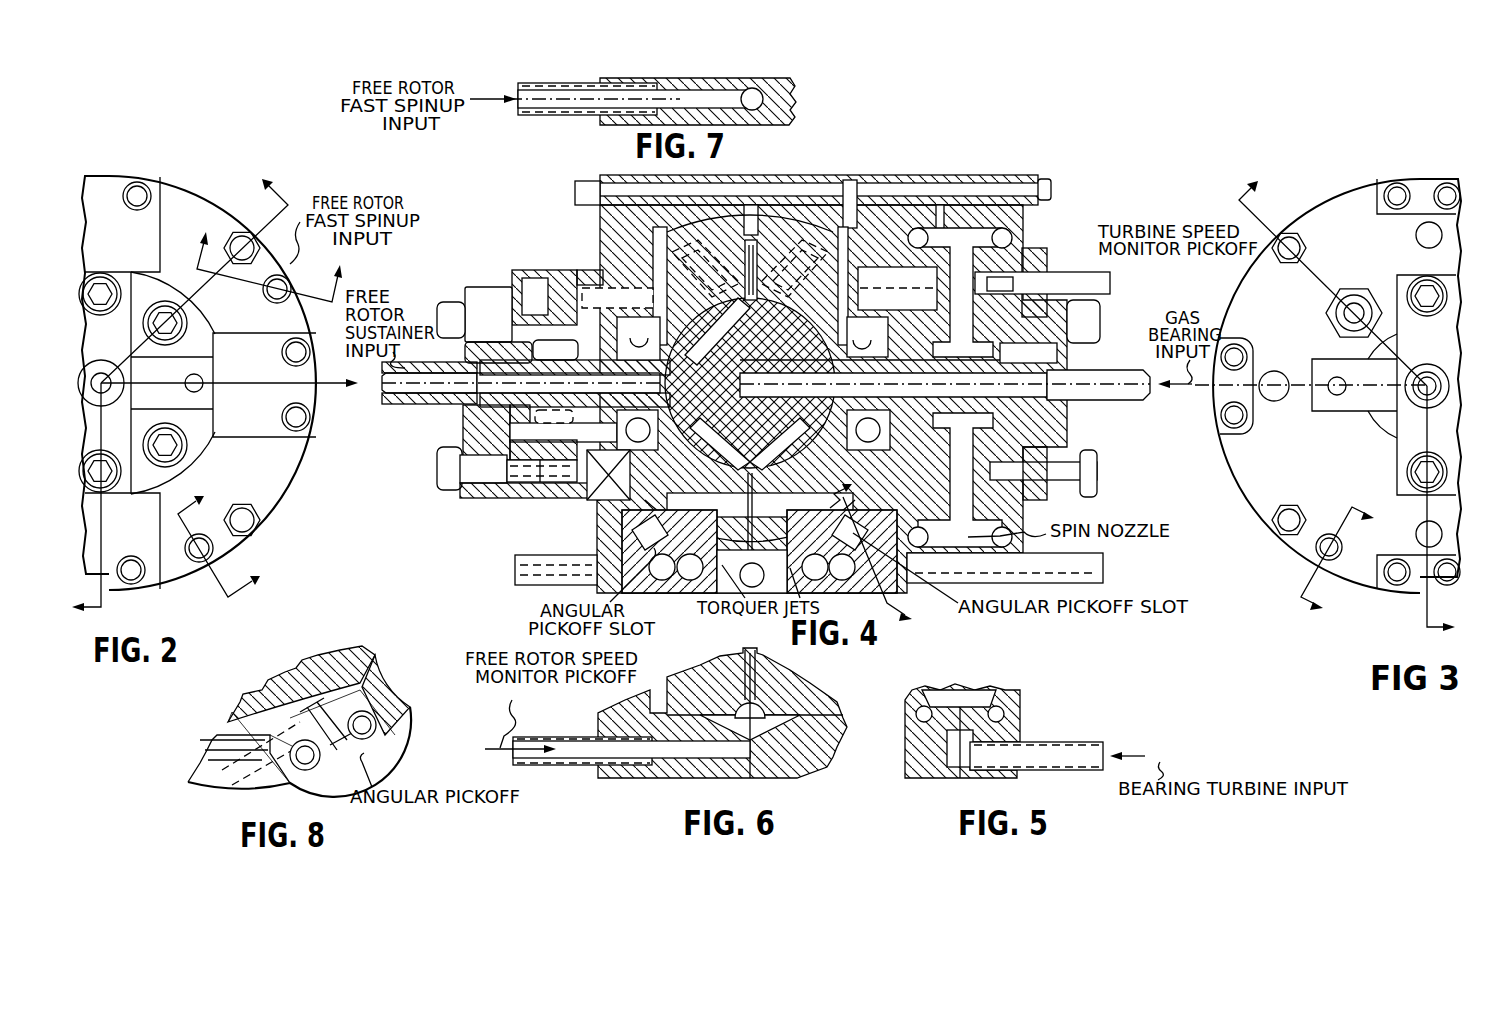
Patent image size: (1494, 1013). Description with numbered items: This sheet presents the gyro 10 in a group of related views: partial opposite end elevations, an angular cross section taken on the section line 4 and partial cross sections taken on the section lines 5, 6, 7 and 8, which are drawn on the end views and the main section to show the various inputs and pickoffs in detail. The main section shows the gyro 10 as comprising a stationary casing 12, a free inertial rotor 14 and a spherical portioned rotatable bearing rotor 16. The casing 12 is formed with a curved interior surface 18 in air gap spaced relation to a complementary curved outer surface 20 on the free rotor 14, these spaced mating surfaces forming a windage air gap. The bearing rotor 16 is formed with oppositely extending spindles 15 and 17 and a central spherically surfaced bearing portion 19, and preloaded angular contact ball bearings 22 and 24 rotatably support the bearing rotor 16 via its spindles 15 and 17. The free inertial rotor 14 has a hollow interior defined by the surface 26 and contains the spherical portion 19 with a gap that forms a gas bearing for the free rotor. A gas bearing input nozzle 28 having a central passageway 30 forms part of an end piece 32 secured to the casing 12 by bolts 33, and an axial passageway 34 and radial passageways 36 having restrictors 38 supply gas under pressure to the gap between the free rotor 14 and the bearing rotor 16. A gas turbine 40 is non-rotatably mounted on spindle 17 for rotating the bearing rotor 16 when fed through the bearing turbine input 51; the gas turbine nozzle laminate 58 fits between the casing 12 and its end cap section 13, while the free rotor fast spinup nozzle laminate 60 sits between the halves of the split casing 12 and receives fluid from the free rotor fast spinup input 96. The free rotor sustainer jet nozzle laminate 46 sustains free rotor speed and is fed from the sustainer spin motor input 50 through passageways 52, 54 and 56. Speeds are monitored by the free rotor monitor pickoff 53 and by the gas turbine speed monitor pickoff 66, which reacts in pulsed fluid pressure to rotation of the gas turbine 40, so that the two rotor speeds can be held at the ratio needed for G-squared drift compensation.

In FIG. 2, the section line 4 is at (179, 400).
In FIG. 3, the section line 4 is at (1355, 403).
In FIG. 3, the section line 5 is at (1345, 566).
In FIG. 2, the section line 6 is at (271, 254).
In FIG. 2, the section line 7 is at (224, 538).
In FIG. 4, the section line 8 is at (881, 546).
In FIG. 4, the gyro 10 is at (745, 180).
In FIG. 4, the stationary casing 12 is at (888, 223).
In FIG. 4, the end cap section 13 is at (1026, 227).
In FIG. 4, the free inertial rotor 14 is at (796, 250).
In FIG. 4, the spindle 15 is at (628, 374).
In FIG. 4, the bearing rotor 16 is at (857, 243).
In FIG. 4, the spindle 17 is at (914, 374).
In FIG. 4, the curved interior surface 18 is at (722, 180).
In FIG. 4, the central spherically surfaced bearing portion 19 is at (771, 365).
In FIG. 4, the curved outer surface 20 is at (620, 180).
In FIG. 4, the preloaded angular contact ball bearing 22 is at (638, 338).
In FIG. 4, the preloaded angular contact ball bearing 24 is at (867, 336).
In FIG. 4, the surface 26 is at (883, 242).
In FIG. 4, the gas bearing input nozzle 28 is at (1088, 359).
In FIG. 4, the central passageway 30 is at (1113, 392).
In FIG. 4, the end piece 32 is at (1041, 361).
In FIG. 4, the bolts 33 is at (1087, 479).
In FIG. 4, the axial passageway 34 is at (1001, 392).
In FIG. 4, the radial passageways 36 is at (736, 442).
In FIG. 4, the restrictors 38 is at (705, 452).
In FIG. 4, the gas turbine 40 is at (972, 261).
In FIG. 4, the free rotor sustainer jet nozzle laminate 46 is at (762, 262).
In FIG. 4, the sustainer spin motor input 50 is at (403, 404).
In FIG. 5, the bearing turbine input 51 is at (1066, 742).
In FIG. 4, the passageway 52 is at (443, 392).
In FIG. 6, the free rotor monitor pickoff 53 is at (555, 744).
In FIG. 4, the passageway 54 is at (536, 392).
In FIG. 4, the passageway 56 is at (722, 340).
In FIG. 4, the gas turbine nozzle laminate 58 is at (962, 176).
In FIG. 4, the free rotor fast spinup nozzle laminate 60 is at (758, 175).
In FIG. 4, the gas turbine speed monitor pickoff 66 is at (1050, 268).
In FIG. 7, the free rotor fast spinup input 96 is at (620, 85).